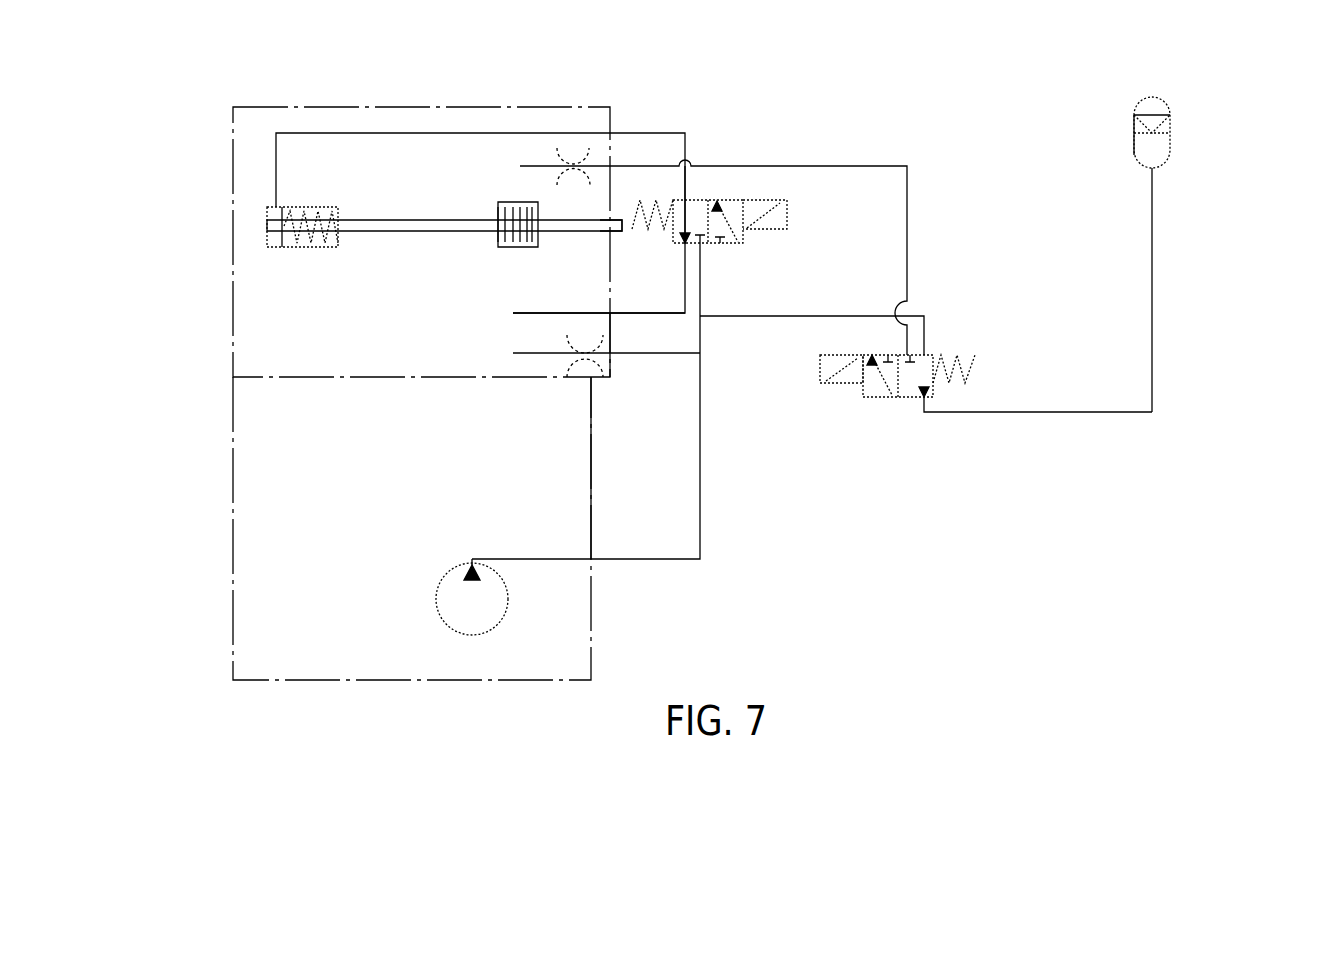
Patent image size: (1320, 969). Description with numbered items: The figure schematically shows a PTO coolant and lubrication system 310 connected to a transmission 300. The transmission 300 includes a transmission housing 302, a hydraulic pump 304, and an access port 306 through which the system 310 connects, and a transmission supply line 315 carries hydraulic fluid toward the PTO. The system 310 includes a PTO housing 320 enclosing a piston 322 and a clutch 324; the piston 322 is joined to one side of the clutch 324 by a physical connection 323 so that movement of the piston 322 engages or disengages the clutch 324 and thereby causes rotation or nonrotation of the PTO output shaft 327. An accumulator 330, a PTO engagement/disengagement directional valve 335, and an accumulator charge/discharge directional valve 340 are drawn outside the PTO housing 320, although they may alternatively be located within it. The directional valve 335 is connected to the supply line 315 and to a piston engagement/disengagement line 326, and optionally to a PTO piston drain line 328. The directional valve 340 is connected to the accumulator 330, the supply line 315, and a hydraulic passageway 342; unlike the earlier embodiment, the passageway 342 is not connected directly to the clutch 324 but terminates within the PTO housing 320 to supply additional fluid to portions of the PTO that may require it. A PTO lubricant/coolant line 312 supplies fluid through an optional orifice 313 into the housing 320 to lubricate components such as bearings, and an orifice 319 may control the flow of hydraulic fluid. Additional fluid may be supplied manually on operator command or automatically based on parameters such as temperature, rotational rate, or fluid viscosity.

The transmission 300 is at (364, 716).
The transmission housing 302 is at (232, 497).
The hydraulic pump 304 is at (498, 623).
The access port 306 is at (605, 557).
The PTO lubrication system 310 is at (1190, 472).
The PTO lubricant/coolant line 312 is at (637, 360).
The orifice 313 is at (582, 368).
The transmission supply line 315 is at (662, 560).
The orifice 319 is at (573, 160).
The PTO housing 320 is at (228, 262).
The piston 322 is at (298, 250).
The physical connection 323 is at (405, 218).
The clutch 324 is at (513, 248).
The piston engagement/disengagement line 326 is at (345, 130).
The PTO output shaft 327 is at (578, 233).
The PTO piston drain line 328 is at (532, 315).
The accumulator 330 is at (1168, 155).
The PTO engagement/disengagement directional valve 335 is at (765, 200).
The accumulator charge/discharge directional valve 340 is at (873, 398).
The hydraulic passageway 342 is at (720, 165).